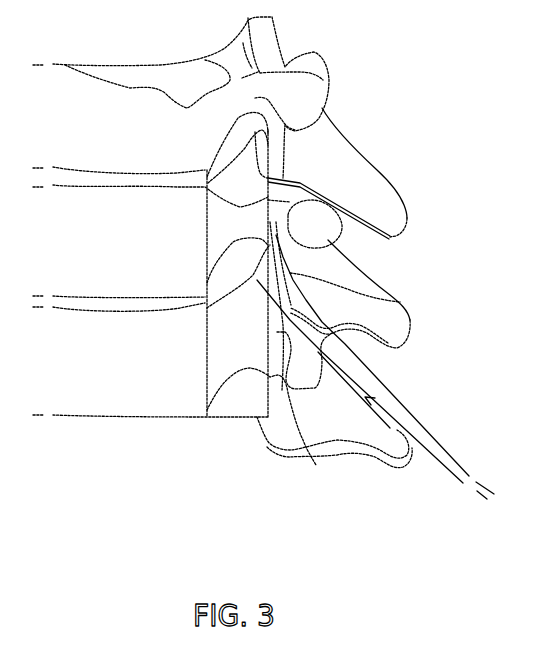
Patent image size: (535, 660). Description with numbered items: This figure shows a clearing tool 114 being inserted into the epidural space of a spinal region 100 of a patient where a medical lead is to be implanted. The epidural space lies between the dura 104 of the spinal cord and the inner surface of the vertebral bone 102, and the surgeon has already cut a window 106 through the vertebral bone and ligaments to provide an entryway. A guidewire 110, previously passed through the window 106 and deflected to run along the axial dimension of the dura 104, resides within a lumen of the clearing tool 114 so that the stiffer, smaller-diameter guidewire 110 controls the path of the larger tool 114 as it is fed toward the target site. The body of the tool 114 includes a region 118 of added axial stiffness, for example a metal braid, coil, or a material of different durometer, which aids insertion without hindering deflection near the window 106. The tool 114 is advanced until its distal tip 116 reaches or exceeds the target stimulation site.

The spinal region 100 is at (387, 66).
The vertebral bone 102 is at (345, 281).
The dura 104 is at (230, 403).
The window 106 is at (311, 455).
The guidewire 110 is at (280, 242).
The clearing tool 114 is at (413, 418).
The distal tip 116 is at (285, 257).
The region 118 is at (397, 301).